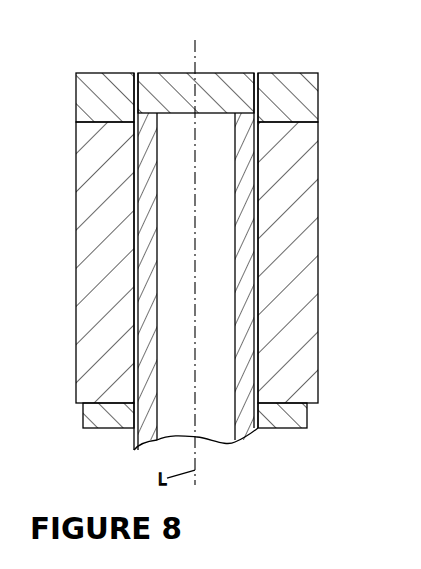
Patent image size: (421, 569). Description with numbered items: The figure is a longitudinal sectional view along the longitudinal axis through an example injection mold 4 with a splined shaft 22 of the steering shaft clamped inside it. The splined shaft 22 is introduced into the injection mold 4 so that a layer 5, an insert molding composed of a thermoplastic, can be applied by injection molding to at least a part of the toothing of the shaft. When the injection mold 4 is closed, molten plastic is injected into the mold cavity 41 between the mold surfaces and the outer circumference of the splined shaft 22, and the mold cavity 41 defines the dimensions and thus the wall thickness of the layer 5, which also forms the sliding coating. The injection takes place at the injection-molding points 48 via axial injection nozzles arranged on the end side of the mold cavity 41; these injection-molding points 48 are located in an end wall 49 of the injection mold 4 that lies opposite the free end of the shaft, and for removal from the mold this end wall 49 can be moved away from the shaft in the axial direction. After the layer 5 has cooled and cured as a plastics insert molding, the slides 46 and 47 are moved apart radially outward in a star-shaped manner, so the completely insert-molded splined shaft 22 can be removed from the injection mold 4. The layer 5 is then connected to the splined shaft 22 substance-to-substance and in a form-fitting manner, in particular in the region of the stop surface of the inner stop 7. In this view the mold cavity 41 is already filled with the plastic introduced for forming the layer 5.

The injection mold 4 is at (209, 250).
The layer 5 is at (262, 196).
The inner stop 7 is at (137, 390).
The splined shaft 22 is at (150, 250).
The mold cavity 41 is at (260, 327).
The slide 46 is at (95, 302).
The slide 47 is at (307, 275).
The injection-molding points 48 is at (139, 72).
The end wall 49 is at (283, 98).